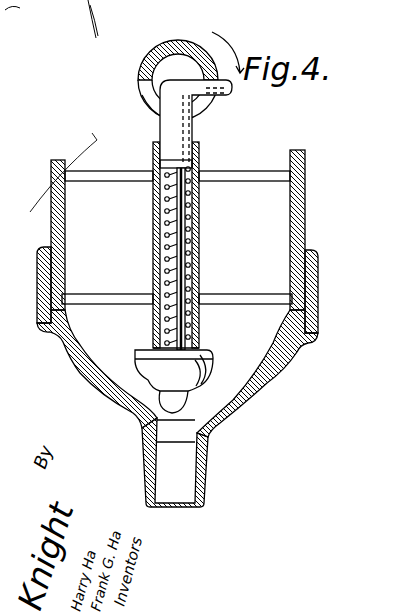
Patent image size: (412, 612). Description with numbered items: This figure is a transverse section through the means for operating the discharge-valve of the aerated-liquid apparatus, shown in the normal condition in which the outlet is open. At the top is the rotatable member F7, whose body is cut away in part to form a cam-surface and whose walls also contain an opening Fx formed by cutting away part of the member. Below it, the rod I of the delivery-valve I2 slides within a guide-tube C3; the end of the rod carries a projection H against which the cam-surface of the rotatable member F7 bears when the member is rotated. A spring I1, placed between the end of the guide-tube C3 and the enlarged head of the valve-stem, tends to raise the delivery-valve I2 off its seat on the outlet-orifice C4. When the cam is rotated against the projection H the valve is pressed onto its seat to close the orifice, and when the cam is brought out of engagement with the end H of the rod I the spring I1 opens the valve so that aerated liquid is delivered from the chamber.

The rotatable member F7 is at (142, 63).
The opening Fx is at (150, 98).
The projection H is at (233, 92).
The guide-tube C3 is at (212, 285).
The rod I is at (177, 222).
The spring I1 is at (163, 240).
The outlet-orifice C4 is at (196, 352).
The delivery-valve I2 is at (163, 472).